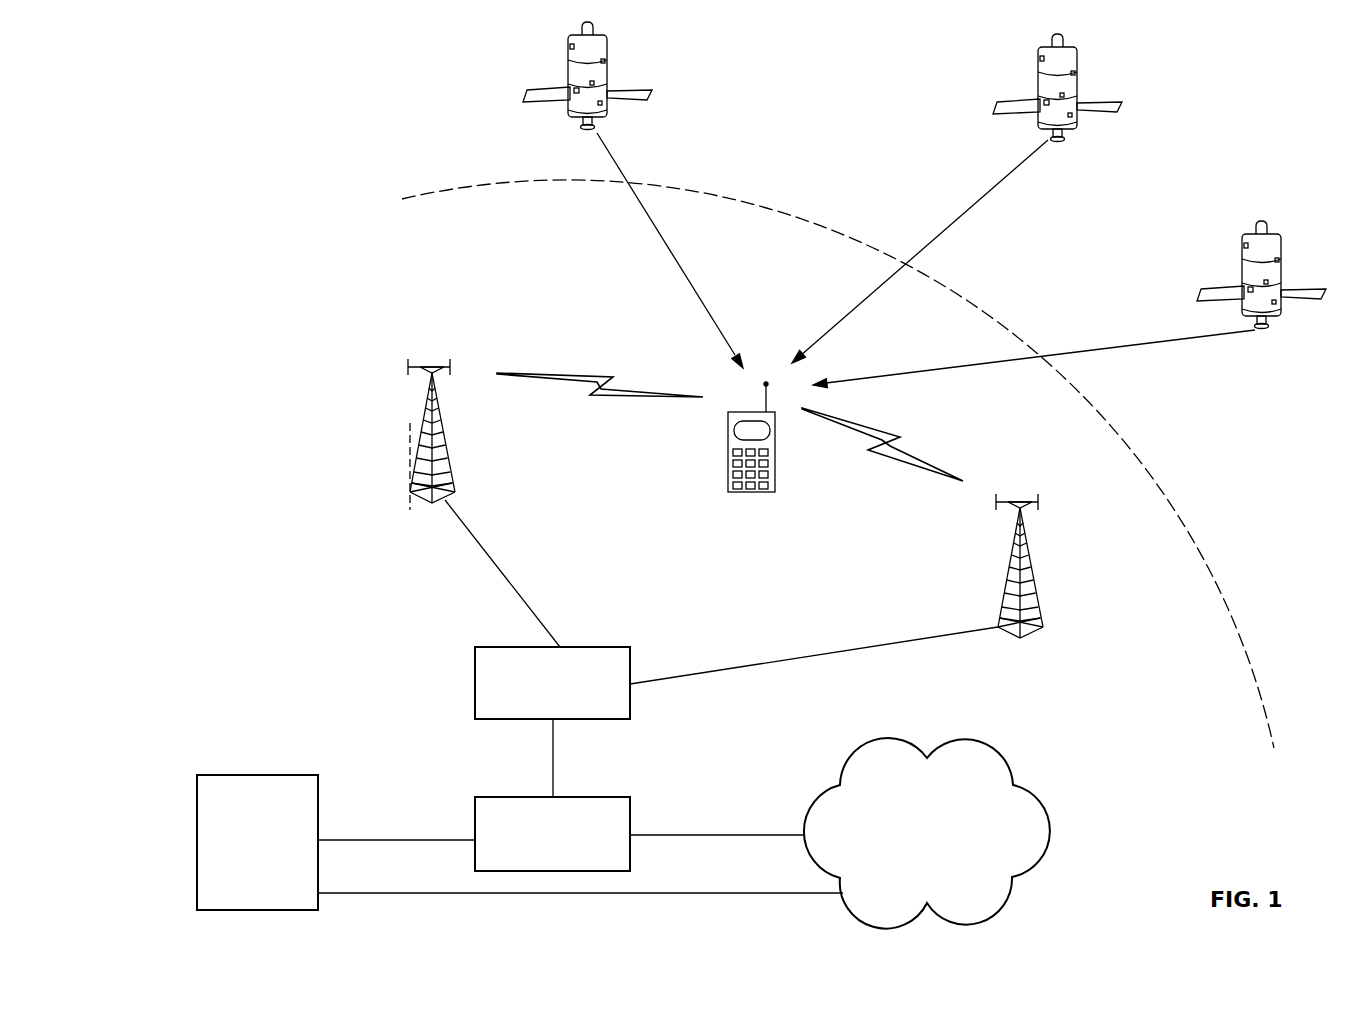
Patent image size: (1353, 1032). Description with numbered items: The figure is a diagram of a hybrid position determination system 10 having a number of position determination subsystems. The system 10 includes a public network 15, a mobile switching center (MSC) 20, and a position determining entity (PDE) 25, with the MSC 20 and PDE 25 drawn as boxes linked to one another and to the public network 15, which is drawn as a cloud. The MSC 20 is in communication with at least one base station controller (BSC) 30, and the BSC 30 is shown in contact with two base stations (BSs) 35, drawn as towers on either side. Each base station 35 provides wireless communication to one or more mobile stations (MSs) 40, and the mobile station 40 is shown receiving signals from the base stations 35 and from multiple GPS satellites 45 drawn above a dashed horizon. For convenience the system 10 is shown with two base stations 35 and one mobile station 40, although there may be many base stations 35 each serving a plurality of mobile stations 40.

The hybrid position determination system 10 is at (236, 346).
The public network 15 is at (927, 833).
The mobile switching center (MSC) 20 is at (552, 834).
The position determining entity (PDE) 25 is at (257, 842).
The base station controller (BSC) 30 is at (552, 683).
The base station (BS) 35 is at (410, 442).
The mobile station (MS) 40 is at (727, 473).
The GPS satellite 45 is at (568, 46).